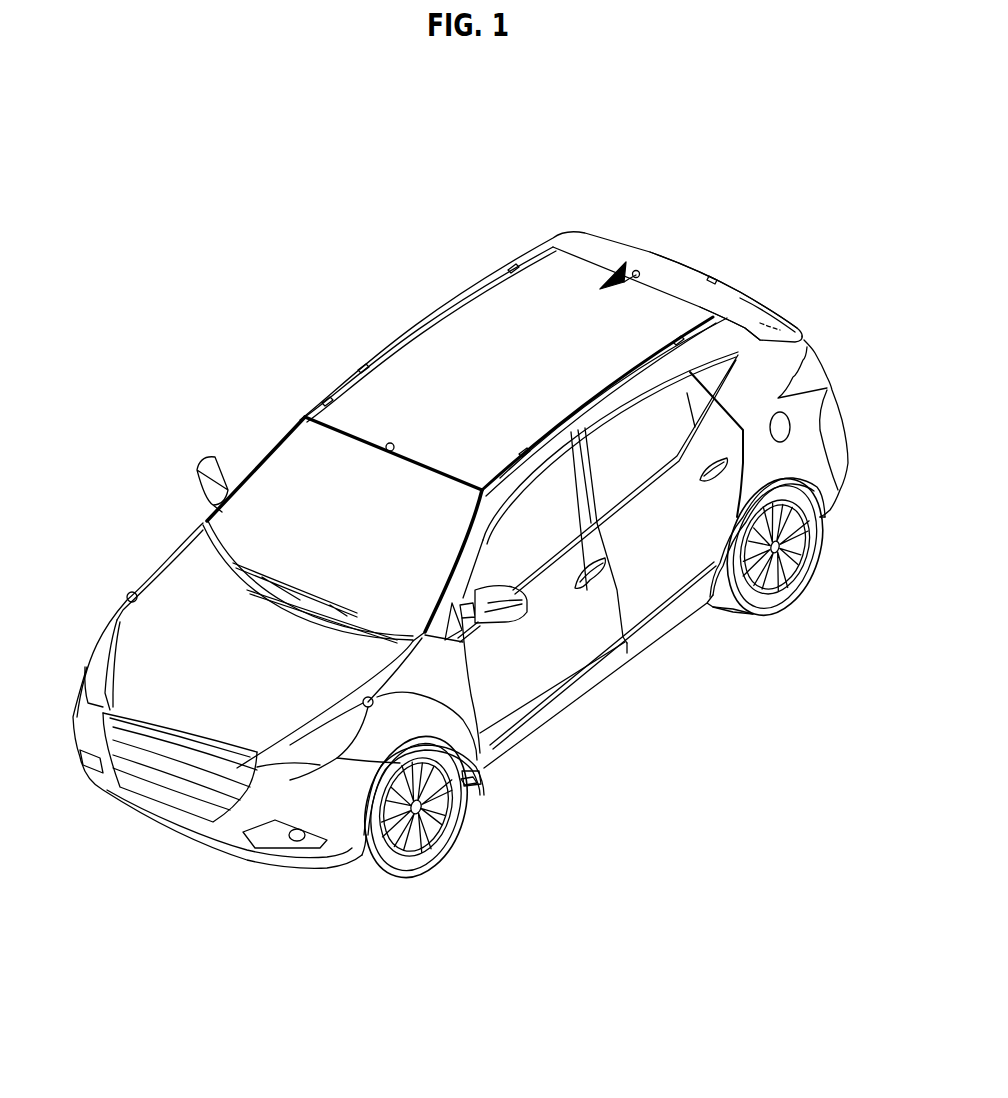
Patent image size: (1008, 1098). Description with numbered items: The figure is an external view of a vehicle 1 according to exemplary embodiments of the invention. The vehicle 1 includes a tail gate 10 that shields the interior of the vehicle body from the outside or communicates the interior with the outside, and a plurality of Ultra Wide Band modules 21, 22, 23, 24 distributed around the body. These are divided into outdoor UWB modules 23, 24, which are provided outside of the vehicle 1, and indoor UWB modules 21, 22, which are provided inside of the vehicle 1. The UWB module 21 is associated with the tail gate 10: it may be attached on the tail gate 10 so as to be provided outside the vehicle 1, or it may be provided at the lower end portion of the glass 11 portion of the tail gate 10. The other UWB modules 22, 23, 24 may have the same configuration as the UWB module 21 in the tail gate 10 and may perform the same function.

The vehicle 1 is at (390, 182).
The tail gate 10 is at (788, 313).
The glass 11 is at (760, 314).
The UWB module 21 is at (635, 271).
The UWB module 22 is at (388, 443).
The UWB module 23 is at (482, 757).
The UWB module 24 is at (130, 592).